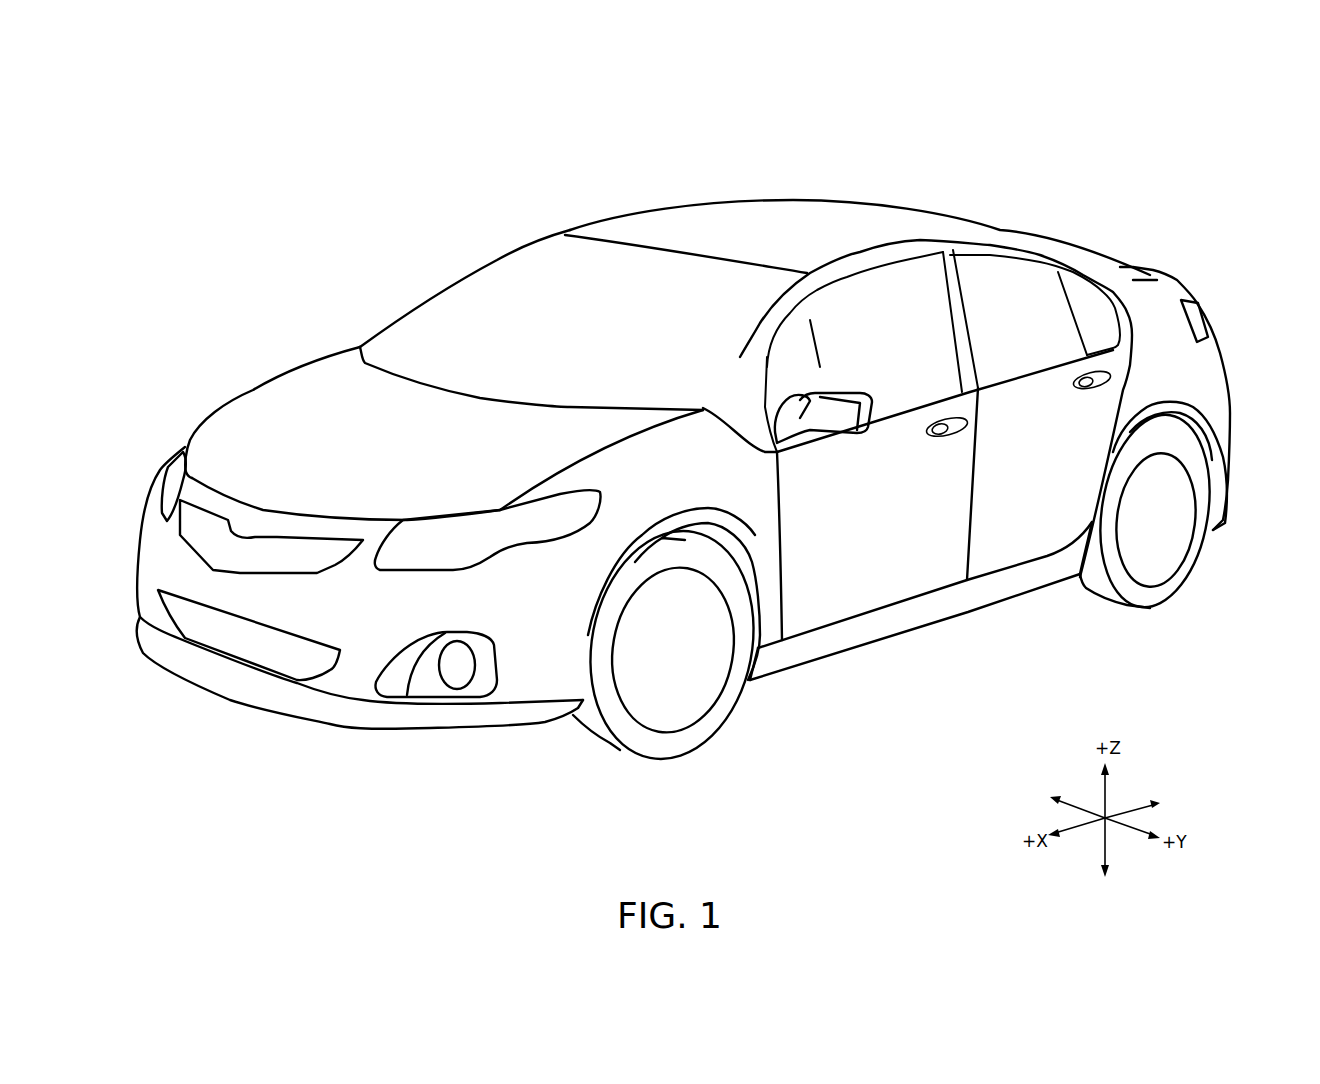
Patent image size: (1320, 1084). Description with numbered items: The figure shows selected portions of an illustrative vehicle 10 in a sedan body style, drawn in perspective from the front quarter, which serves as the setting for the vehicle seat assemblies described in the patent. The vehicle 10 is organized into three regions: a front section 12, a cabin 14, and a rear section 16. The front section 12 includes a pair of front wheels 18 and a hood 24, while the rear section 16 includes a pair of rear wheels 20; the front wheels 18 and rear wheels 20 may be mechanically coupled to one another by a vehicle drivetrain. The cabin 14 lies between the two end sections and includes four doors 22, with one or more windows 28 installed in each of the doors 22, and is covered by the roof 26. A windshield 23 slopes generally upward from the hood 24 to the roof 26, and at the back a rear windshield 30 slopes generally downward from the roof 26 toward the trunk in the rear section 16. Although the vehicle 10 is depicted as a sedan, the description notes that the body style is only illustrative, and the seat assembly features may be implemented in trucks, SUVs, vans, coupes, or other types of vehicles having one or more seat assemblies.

The vehicle 10 is at (1033, 160).
The front section 12 is at (253, 390).
The cabin 14 is at (870, 603).
The rear section 16 is at (1213, 367).
The front wheels 18 is at (727, 717).
The rear wheels 20 is at (1183, 577).
The doors 22 is at (945, 495).
The windshield 23 is at (531, 320).
The hood 24 is at (346, 485).
The roof 26 is at (857, 237).
The windows 28 is at (942, 351).
The rear windshield 30 is at (1083, 234).